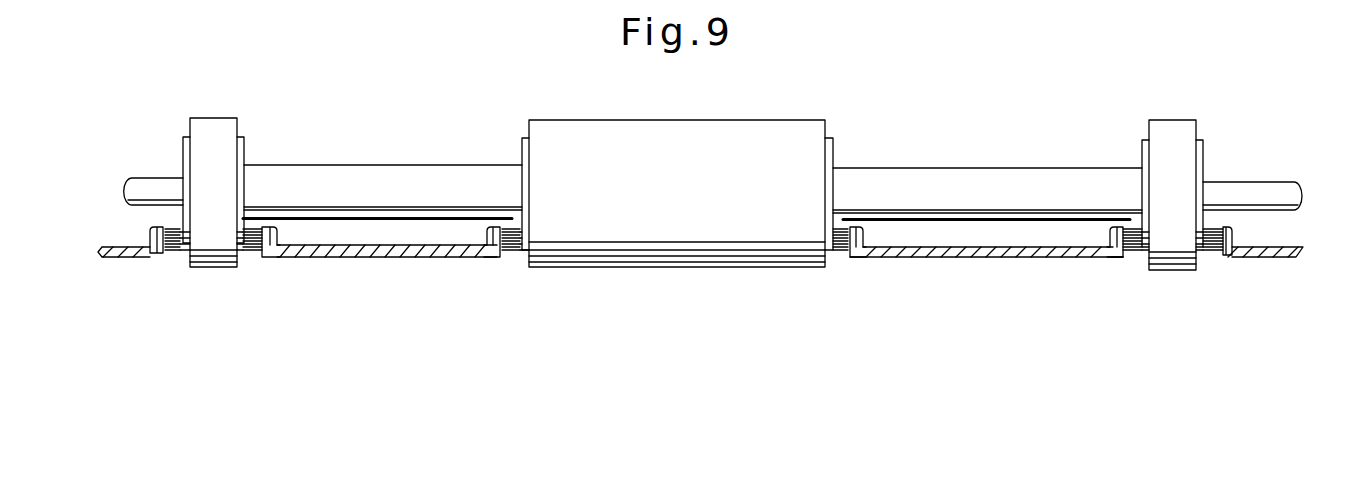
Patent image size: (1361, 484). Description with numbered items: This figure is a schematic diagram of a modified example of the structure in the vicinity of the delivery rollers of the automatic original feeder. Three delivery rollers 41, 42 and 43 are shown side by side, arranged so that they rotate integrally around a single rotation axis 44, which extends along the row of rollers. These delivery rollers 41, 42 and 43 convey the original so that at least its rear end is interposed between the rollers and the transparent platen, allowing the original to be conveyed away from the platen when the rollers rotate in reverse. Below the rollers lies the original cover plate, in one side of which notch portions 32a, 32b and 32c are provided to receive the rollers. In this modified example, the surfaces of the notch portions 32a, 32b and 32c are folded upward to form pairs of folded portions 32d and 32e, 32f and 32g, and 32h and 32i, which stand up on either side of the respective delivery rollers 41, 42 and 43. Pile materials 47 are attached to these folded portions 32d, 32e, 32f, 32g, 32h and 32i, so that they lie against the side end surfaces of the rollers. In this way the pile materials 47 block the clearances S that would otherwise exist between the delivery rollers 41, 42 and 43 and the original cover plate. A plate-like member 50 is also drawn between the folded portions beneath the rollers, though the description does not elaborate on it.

The delivery roller 41 is at (225, 123).
The delivery roller 42 is at (730, 130).
The delivery roller 43 is at (1183, 128).
The rotation axis 44 is at (1270, 187).
The pile material 47 is at (167, 226).
The guide plate 50 is at (380, 258).
The notch portion 32a is at (187, 262).
The notch portion 32b is at (522, 262).
The notch portion 32c is at (1122, 267).
The folded portion 32d is at (152, 239).
The folded portion 32e is at (277, 238).
The folded portion 32f is at (487, 238).
The folded portion 32g is at (863, 237).
The folded portion 32h is at (1110, 238).
The folded portion 32i is at (1236, 236).
The clearance S is at (165, 258).